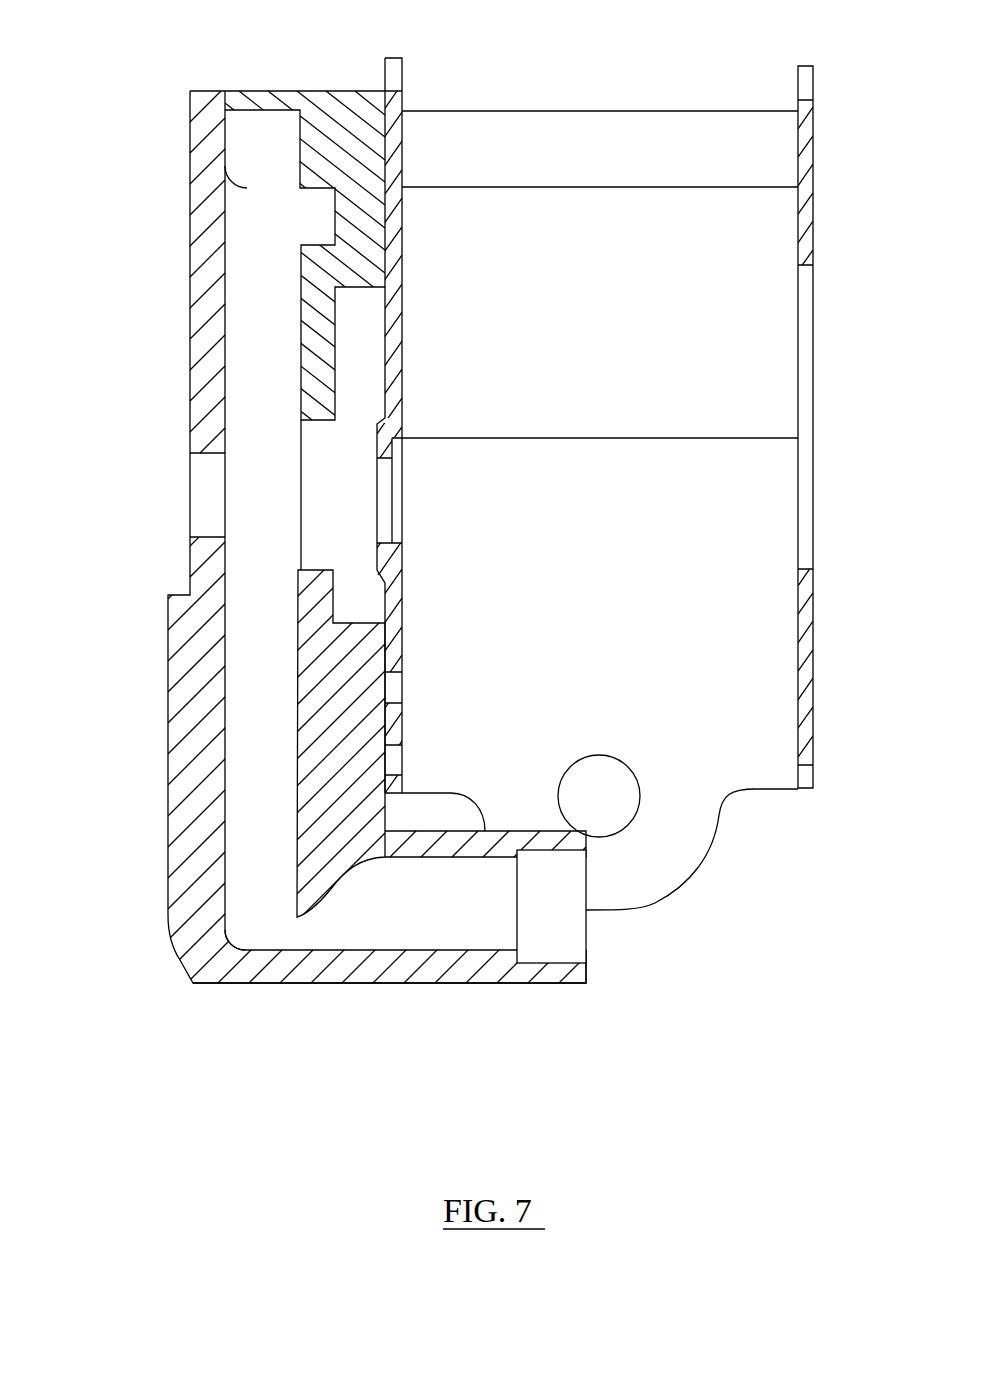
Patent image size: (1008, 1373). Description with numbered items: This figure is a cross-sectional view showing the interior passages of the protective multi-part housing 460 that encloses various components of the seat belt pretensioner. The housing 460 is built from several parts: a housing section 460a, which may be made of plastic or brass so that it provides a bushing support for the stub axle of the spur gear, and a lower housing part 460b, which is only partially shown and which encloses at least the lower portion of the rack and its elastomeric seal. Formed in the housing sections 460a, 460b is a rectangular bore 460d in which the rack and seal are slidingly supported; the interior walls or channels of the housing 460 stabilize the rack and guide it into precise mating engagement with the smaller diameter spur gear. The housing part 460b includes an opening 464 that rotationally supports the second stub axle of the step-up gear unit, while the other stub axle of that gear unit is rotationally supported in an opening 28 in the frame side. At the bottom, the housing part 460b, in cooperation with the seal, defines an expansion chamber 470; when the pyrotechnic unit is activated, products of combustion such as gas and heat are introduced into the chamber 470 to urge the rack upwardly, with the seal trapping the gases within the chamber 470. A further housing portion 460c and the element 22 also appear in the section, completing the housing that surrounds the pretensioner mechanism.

The protective multi-part housing 460 is at (268, 85).
The housing section 460a is at (190, 193).
The housing part 460b is at (235, 985).
The block of boot 460c is at (462, 974).
The rectangular bore 460d is at (228, 815).
The opening 464 is at (206, 455).
The expansion chamber 470 is at (258, 850).
The opening 28 is at (388, 528).
The housing sleeve 22 is at (815, 713).